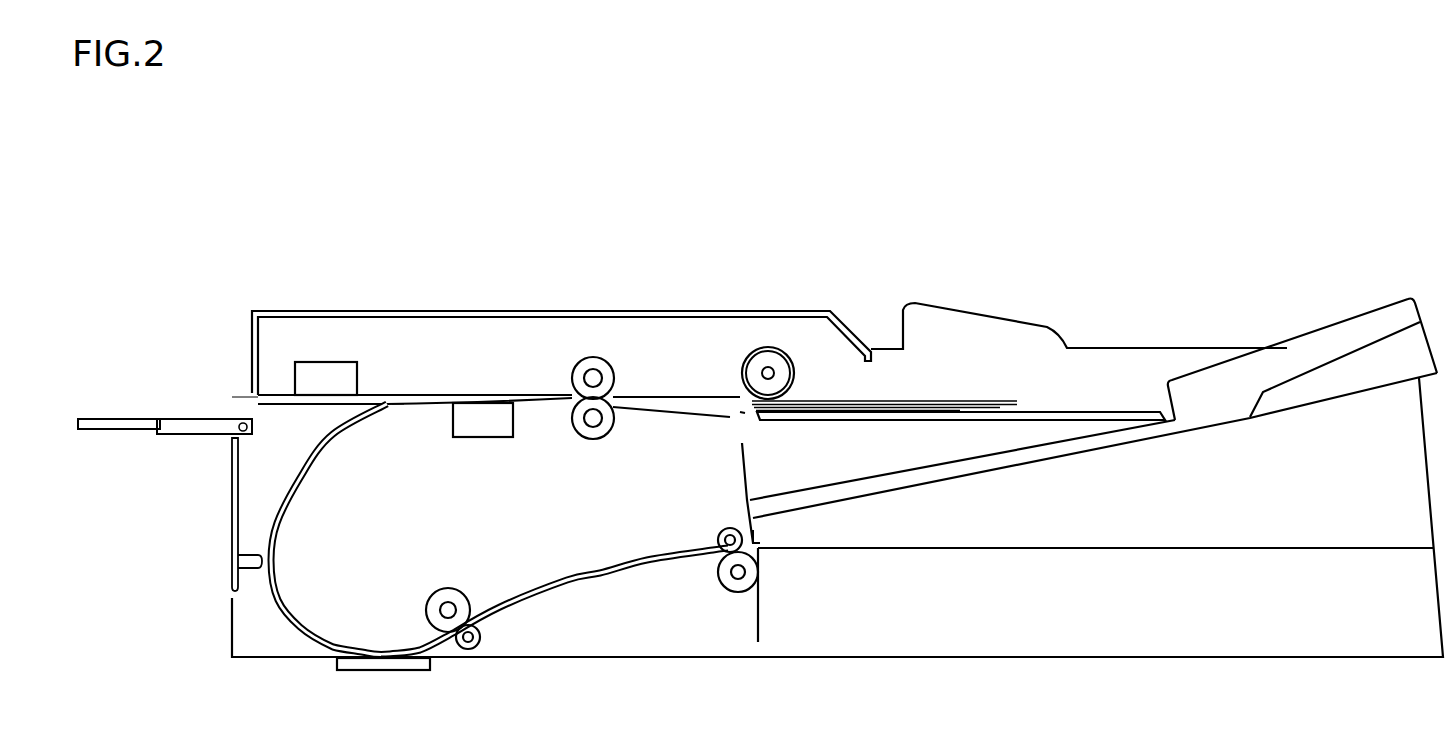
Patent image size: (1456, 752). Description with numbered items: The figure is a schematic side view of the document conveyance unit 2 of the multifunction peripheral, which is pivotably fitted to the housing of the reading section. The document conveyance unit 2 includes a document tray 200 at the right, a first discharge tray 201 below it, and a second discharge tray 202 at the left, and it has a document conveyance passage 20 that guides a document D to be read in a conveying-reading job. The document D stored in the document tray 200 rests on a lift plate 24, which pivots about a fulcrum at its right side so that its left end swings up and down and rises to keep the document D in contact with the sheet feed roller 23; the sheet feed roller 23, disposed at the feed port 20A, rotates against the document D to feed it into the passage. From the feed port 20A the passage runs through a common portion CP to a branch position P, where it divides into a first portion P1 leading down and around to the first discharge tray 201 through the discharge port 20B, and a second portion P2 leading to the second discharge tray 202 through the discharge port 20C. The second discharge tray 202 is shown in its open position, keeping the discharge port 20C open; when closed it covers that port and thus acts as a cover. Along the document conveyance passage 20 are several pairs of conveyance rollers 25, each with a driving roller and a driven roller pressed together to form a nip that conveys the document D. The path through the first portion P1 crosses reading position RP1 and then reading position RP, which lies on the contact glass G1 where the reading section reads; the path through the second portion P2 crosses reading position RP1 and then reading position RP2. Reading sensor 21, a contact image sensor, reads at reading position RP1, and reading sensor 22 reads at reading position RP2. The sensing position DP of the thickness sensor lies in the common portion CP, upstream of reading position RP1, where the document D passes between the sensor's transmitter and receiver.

The document conveyance unit 2 is at (1276, 278).
The document conveyance passage 20 is at (444, 471).
The first portion P1 is at (283, 535).
The second portion P2 is at (274, 391).
The common portion CP is at (650, 392).
The sensing position DP is at (673, 404).
The feed port 20A is at (743, 416).
The discharge port 20B is at (766, 537).
The discharge port 20C is at (233, 397).
The reading sensor 21 is at (482, 437).
The reading sensor 22 is at (305, 362).
The sheet feed roller 23 is at (782, 362).
The lift plate 24 is at (1042, 417).
The pairs of conveyance rollers 25 is at (601, 358).
The document tray 200 is at (1117, 413).
The first discharge tray 201 is at (1077, 548).
The second discharge tray 202 is at (148, 418).
The document D is at (957, 400).
The branch position P is at (398, 402).
The reading position RP is at (387, 655).
The reading position RP1 is at (483, 401).
The reading position RP2 is at (322, 398).
The contact glass G1 is at (405, 664).